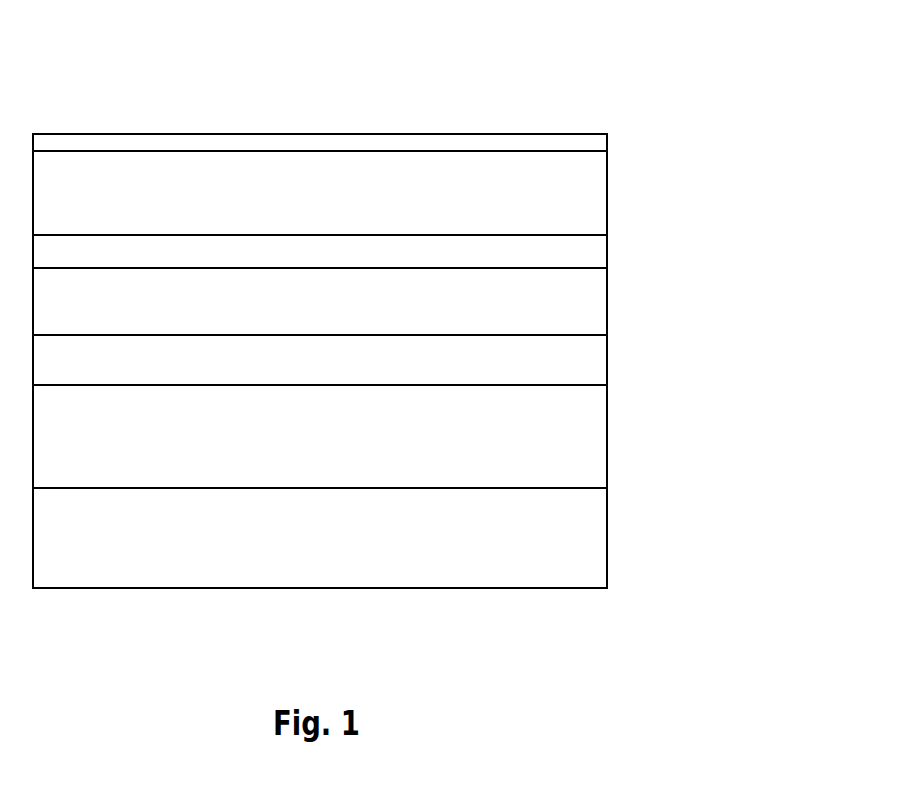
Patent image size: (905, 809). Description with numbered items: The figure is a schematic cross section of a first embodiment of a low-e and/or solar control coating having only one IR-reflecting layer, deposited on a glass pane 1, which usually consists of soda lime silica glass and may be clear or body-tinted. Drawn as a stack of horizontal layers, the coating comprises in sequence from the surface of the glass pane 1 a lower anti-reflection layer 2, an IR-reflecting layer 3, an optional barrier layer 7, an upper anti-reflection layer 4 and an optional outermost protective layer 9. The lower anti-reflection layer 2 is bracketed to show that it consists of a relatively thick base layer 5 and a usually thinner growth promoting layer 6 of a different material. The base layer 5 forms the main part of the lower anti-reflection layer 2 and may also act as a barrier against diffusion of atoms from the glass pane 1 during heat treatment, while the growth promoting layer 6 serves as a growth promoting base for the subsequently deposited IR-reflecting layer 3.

The glass pane 1 is at (589, 538).
The lower anti-reflection layer 2 is at (823, 285).
The IR-reflecting layer 3 is at (588, 302).
The upper anti-reflection layer 4 is at (590, 183).
The base layer 5 is at (589, 437).
The growth promoting layer 6 is at (590, 352).
The barrier layer 7 is at (590, 250).
The outermost protective layer 9 is at (590, 133).